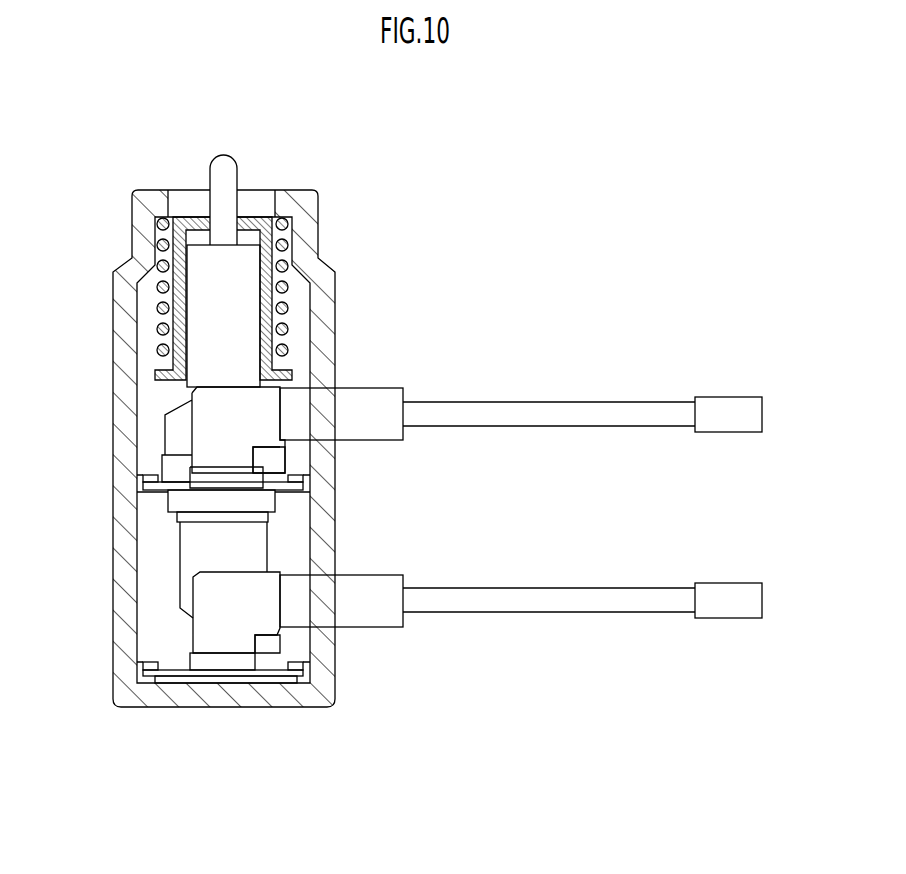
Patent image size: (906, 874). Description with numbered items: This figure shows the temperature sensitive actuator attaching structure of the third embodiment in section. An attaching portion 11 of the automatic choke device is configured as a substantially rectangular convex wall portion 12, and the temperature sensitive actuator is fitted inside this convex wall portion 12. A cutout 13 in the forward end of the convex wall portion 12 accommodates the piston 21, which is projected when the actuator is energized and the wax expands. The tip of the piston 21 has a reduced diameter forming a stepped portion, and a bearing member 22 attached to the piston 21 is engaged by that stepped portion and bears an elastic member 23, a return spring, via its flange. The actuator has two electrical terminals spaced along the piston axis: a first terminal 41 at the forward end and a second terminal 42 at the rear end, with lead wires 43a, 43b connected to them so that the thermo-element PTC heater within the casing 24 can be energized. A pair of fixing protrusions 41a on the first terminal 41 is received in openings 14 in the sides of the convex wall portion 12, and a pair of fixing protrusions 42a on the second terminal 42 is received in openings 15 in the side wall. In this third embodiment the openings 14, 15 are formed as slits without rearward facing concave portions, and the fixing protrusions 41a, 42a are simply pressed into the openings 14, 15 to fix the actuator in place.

The attaching portion 11 is at (332, 184).
The convex wall portion 12 is at (310, 235).
The cutout 13 is at (196, 196).
The openings 14 is at (155, 480).
The openings 15 is at (152, 672).
The piston 21 is at (222, 155).
The bearing member 22 is at (243, 217).
The elastic member 23 is at (158, 298).
The casing 24 is at (181, 568).
The first terminal 41 is at (210, 418).
The fixing protrusions 41a is at (293, 468).
The second terminal 42 is at (218, 620).
The fixing protrusions 42a is at (294, 666).
The lead wire 43a is at (656, 406).
The lead wire 43b is at (656, 592).